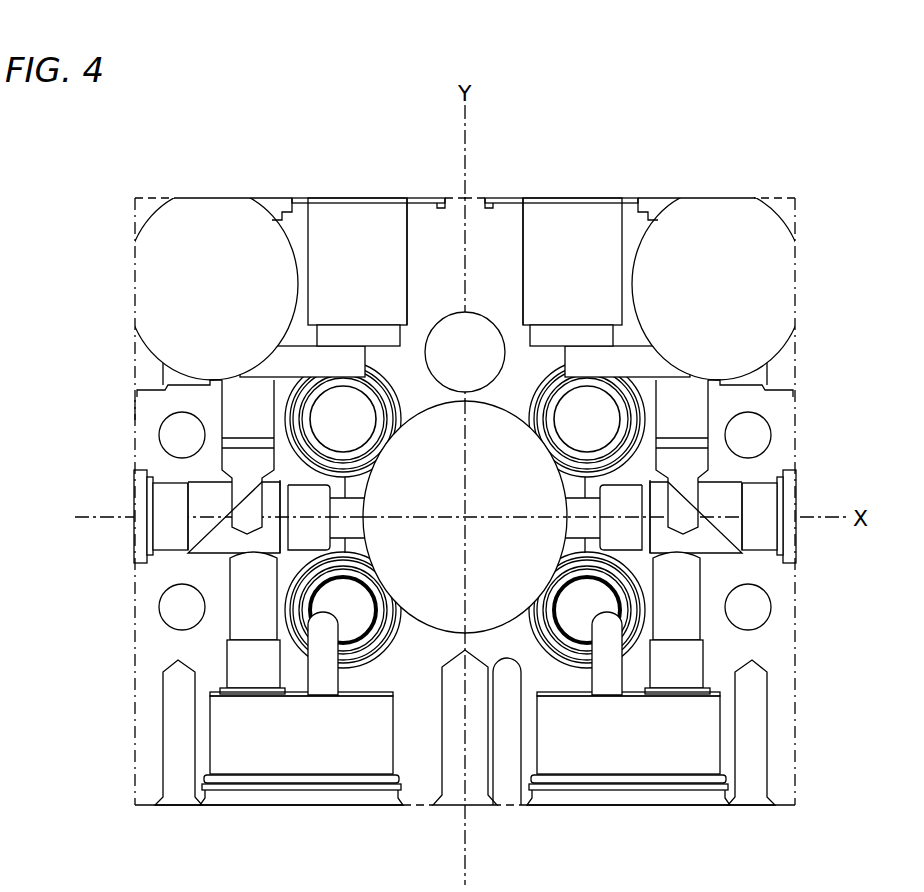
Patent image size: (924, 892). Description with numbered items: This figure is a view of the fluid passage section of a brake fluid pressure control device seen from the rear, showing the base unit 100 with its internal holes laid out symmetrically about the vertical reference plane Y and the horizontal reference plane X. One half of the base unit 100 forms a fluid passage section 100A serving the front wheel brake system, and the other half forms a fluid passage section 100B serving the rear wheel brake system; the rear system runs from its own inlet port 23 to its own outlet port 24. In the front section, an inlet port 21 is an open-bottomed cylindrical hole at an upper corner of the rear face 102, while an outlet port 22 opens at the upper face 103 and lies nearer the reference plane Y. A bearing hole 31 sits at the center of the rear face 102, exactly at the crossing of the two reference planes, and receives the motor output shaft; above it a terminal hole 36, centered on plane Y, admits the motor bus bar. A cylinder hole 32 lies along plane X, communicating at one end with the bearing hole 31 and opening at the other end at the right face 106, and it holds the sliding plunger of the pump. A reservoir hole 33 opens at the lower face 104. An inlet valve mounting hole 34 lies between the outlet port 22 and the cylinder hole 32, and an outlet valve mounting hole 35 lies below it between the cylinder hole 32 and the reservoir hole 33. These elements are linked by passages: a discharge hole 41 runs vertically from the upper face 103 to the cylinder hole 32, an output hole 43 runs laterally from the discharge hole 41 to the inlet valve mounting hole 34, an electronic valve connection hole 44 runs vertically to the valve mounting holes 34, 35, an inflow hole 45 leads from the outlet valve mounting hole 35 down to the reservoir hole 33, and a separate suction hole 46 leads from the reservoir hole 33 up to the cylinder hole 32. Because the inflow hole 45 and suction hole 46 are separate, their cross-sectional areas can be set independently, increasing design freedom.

The base unit 100 is at (268, 192).
The fluid passage section 100A is at (155, 192).
The fluid passage section 100B is at (775, 192).
The inlet port 21 is at (231, 289).
The outlet port 22 is at (378, 190).
The inlet port 23 is at (728, 289).
The outlet port 24 is at (584, 190).
The bearing hole 31 is at (528, 483).
The cylinder hole 32 is at (133, 500).
The reservoir hole 33 is at (273, 810).
The inlet valve mounting hole 34 is at (358, 431).
The outlet valve mounting hole 35 is at (358, 612).
The terminal hole 36 is at (483, 300).
The discharge hole 41 is at (230, 400).
The output hole 43 is at (330, 358).
The electronic valve connection hole 44 is at (356, 543).
The inflow hole 45 is at (320, 680).
The suction hole 46 is at (242, 630).
The rear face 102 is at (437, 208).
The upper face 103 is at (513, 200).
The lower face 104 is at (405, 805).
The right face 106 is at (133, 418).